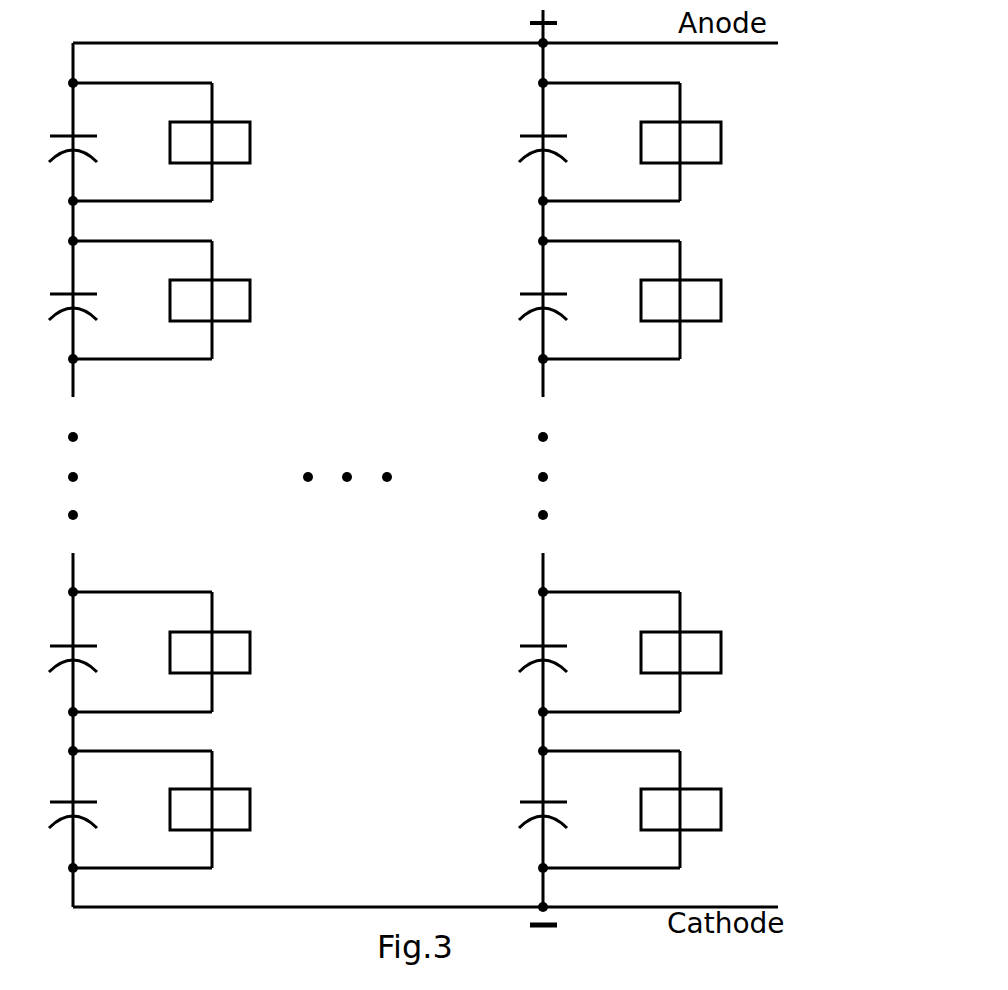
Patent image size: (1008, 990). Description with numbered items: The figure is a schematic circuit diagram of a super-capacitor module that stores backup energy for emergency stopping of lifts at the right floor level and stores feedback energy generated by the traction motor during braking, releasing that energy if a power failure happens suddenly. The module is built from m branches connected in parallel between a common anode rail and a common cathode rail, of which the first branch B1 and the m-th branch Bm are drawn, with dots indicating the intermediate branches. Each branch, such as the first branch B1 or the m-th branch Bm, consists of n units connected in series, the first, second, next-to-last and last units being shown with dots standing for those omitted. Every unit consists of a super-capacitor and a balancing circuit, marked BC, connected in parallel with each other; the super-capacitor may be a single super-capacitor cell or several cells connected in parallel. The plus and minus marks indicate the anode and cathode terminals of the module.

The first branch B1 is at (53, 62).
The m-th branch Bm is at (515, 64).